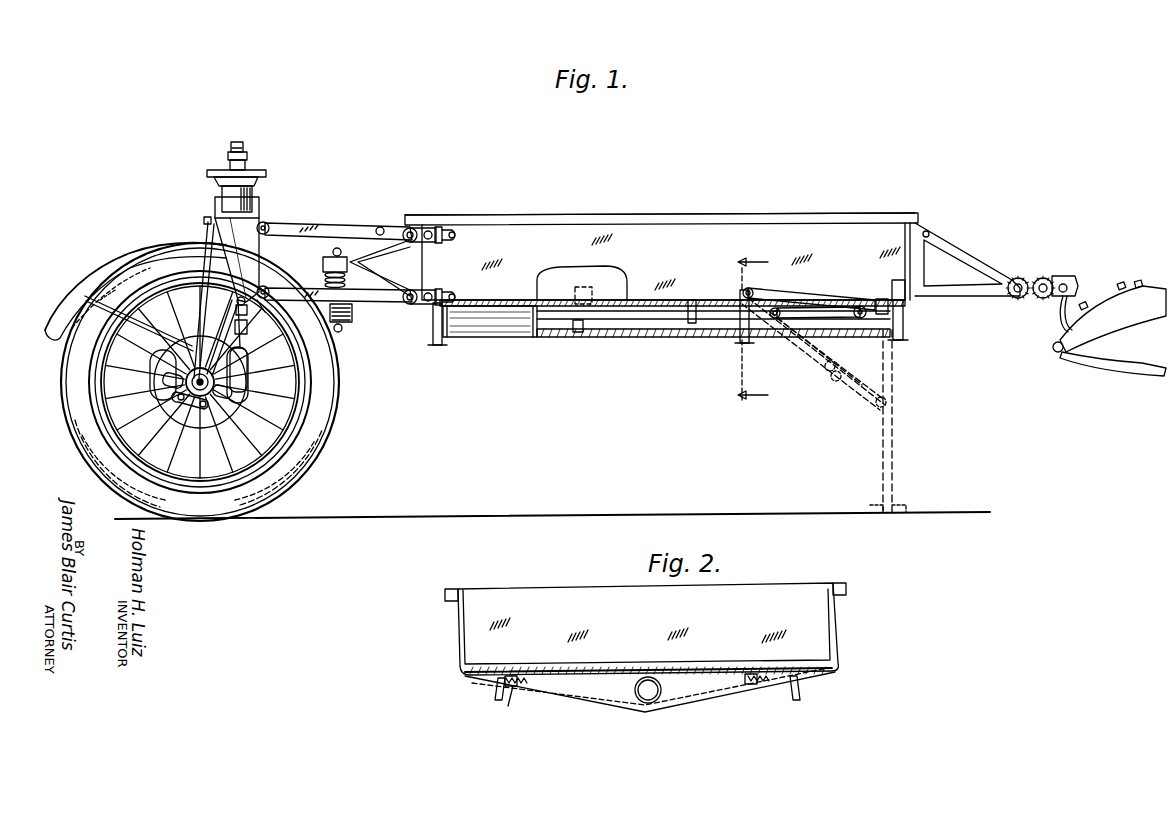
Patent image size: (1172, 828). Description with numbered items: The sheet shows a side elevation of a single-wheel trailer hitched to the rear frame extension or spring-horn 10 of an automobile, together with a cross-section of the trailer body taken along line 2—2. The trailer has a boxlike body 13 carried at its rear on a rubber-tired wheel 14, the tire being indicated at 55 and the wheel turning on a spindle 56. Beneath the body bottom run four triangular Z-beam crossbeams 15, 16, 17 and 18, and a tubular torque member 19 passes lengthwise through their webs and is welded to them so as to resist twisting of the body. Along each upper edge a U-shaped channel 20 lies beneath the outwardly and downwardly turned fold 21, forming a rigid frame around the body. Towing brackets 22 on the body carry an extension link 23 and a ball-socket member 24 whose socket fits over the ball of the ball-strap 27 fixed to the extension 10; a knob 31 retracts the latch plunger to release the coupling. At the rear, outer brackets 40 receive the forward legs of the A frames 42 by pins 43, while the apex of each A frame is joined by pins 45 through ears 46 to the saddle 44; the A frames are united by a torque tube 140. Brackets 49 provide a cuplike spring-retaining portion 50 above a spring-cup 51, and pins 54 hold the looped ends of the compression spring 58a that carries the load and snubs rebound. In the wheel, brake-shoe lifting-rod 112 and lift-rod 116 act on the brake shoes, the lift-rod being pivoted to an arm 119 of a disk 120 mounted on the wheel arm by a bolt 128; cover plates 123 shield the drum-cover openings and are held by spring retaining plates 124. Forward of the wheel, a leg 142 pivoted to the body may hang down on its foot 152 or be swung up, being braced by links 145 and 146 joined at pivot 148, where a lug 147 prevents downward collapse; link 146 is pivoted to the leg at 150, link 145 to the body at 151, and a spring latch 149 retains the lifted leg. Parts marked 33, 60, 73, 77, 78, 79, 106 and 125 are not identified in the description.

In FIG. 1, the frame extension 10 is at (1125, 292).
In FIG. 1, the trailer body 13 is at (760, 222).
In FIG. 2, the trailer body 13 is at (545, 598).
In FIG. 1, the wheel 14 is at (214, 476).
In FIG. 1, the Z-beam crossbeam 15 is at (435, 345).
In FIG. 1, the Z-beam crossbeam 16 is at (580, 332).
In FIG. 2, the Z-beam crossbeam 16 is at (522, 690).
In FIG. 1, the Z-beam crossbeam 17 is at (745, 344).
In FIG. 2, the Z-beam crossbeam 17 is at (565, 688).
In FIG. 1, the Z-beam crossbeam 18 is at (905, 340).
In FIG. 1, the tubular torque member 19 is at (490, 337).
In FIG. 2, the tubular torque member 19 is at (660, 700).
In FIG. 1, the U-shaped channel 20 is at (698, 224).
In FIG. 2, the U-shaped channel 20 is at (449, 602).
In FIG. 1, the fold 21 is at (662, 216).
In FIG. 2, the fold 21 is at (452, 589).
In FIG. 1, the towing bracket 22 is at (968, 258).
In FIG. 1, the extension link 23 is at (1028, 276).
In FIG. 1, the ball-socket member 24 is at (1068, 276).
In FIG. 1, the ball-strap 27 is at (1072, 310).
In FIG. 1, the knob 31 is at (1068, 285).
In FIG. 1, the coupling rollers 33 is at (1012, 297).
In FIG. 1, the outer bracket 40 is at (452, 291).
In FIG. 1, the A frame 42 is at (330, 228).
In FIG. 1, the pin 43 is at (411, 290).
In FIG. 1, the saddle 44 is at (260, 204).
In FIG. 1, the pin 45 is at (266, 235).
In FIG. 1, the ear 46 is at (270, 226).
In FIG. 1, the bracket 49 is at (376, 280).
In FIG. 1, the spring-retaining portion 50 is at (323, 264).
In FIG. 1, the spring-cup 51 is at (176, 345).
In FIG. 1, the pin 54 is at (333, 251).
In FIG. 1, the rubber tire 55 is at (300, 468).
In FIG. 1, the spindle 56 is at (196, 400).
In FIG. 1, the compression spring 58a is at (326, 276).
In FIG. 1, the steering column 60 is at (222, 189).
In FIG. 1, the head flange 73 is at (208, 170).
In FIG. 1, the head nut 77 is at (247, 156).
In FIG. 1, the cap 78 is at (243, 146).
In FIG. 1, the lock washer 79 is at (231, 152).
In FIG. 1, the brake plate 106 is at (230, 400).
In FIG. 1, the brake-shoe lifting-rod 112 is at (150, 276).
In FIG. 1, the lift-rod 116 is at (247, 366).
In FIG. 1, the arm 119 is at (250, 320).
In FIG. 1, the disk 120 is at (165, 289).
In FIG. 1, the cover plate 123 is at (155, 372).
In FIG. 1, the spring retaining plate 124 is at (186, 401).
In FIG. 1, the brake drum 125 is at (228, 412).
In FIG. 1, the bolt 128 is at (190, 295).
In FIG. 1, the torque tube 140 is at (380, 227).
In FIG. 1, the leg 142 is at (705, 322).
In FIG. 2, the leg 142 is at (493, 698).
In FIG. 1, the link 145 is at (808, 300).
In FIG. 1, the link 146 is at (830, 300).
In FIG. 1, the lug 147 is at (880, 298).
In FIG. 1, the pivot 148 is at (860, 305).
In FIG. 1, the spring latch 149 is at (724, 334).
In FIG. 2, the spring latch 149 is at (505, 712).
In FIG. 1, the pivot 150 is at (775, 322).
In FIG. 1, the pivot 151 is at (749, 288).
In FIG. 1, the foot 152 is at (745, 338).
In FIG. 1, the section line 2— 2 is at (753, 328).